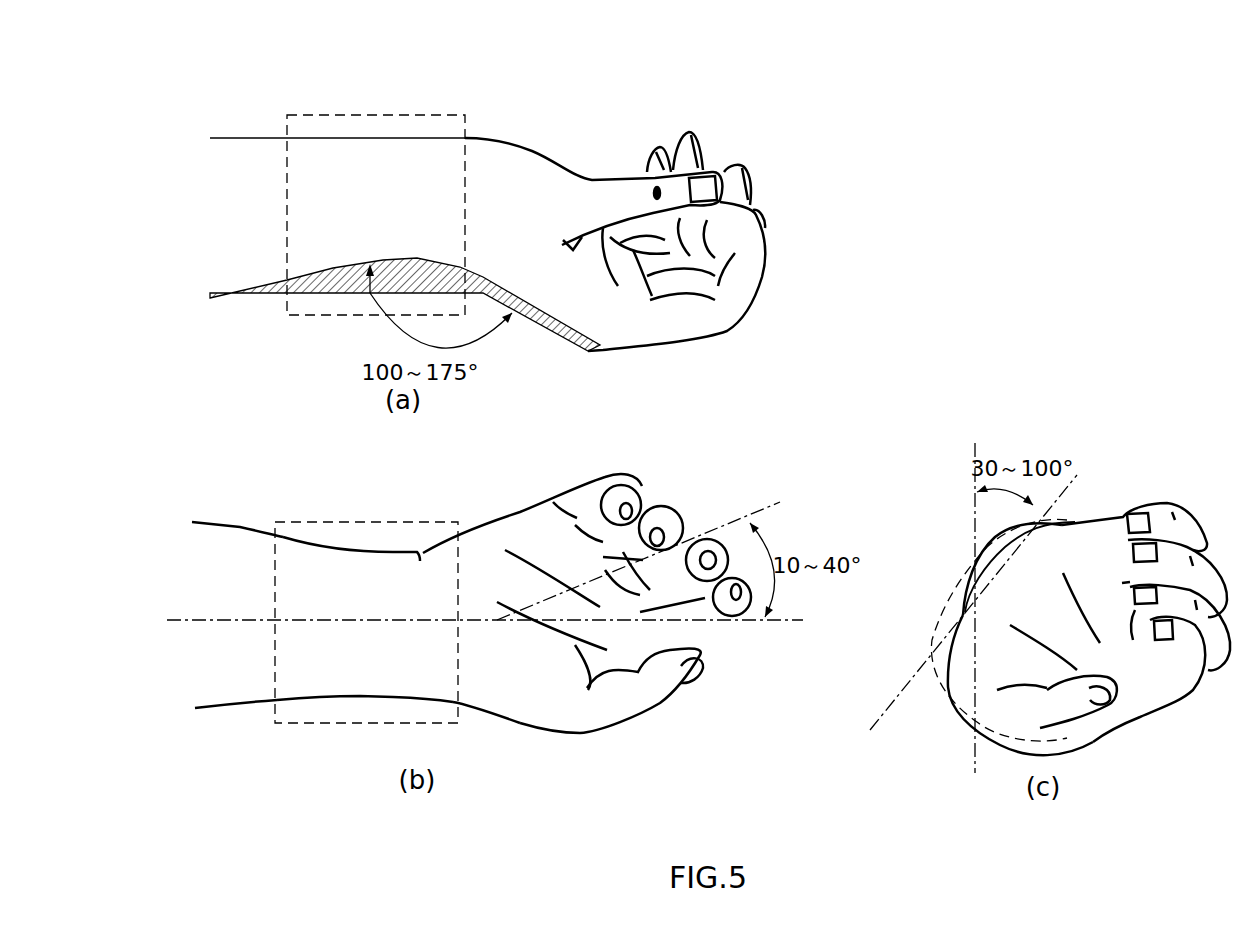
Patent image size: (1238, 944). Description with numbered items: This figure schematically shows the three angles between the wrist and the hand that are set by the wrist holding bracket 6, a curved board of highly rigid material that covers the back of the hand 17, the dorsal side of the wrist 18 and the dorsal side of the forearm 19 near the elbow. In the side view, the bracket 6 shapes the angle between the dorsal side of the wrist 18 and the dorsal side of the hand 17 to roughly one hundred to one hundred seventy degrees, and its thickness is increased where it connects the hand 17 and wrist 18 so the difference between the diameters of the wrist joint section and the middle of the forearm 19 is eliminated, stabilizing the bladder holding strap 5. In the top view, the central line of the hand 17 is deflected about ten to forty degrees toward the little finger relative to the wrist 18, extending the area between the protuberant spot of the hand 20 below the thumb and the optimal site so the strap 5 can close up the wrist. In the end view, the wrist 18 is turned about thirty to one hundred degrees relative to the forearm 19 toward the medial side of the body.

The bladder holding strap 5 is at (365, 315).
The wrist holding bracket 6 is at (535, 323).
The hand 17 is at (485, 183).
The wrist 18 is at (367, 180).
The forearm 19 is at (270, 180).
The protuberant spot of the hand 20 is at (480, 687).